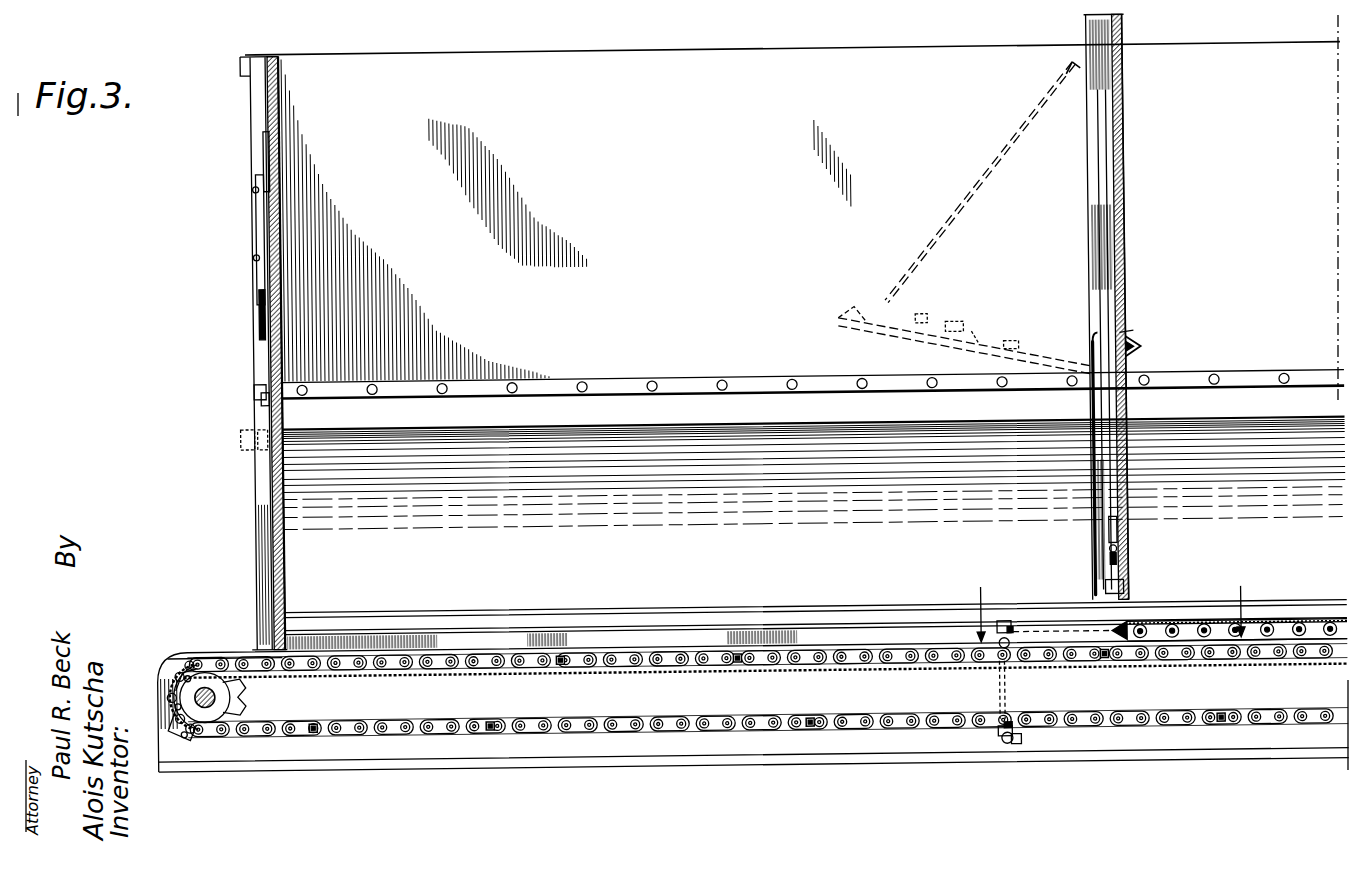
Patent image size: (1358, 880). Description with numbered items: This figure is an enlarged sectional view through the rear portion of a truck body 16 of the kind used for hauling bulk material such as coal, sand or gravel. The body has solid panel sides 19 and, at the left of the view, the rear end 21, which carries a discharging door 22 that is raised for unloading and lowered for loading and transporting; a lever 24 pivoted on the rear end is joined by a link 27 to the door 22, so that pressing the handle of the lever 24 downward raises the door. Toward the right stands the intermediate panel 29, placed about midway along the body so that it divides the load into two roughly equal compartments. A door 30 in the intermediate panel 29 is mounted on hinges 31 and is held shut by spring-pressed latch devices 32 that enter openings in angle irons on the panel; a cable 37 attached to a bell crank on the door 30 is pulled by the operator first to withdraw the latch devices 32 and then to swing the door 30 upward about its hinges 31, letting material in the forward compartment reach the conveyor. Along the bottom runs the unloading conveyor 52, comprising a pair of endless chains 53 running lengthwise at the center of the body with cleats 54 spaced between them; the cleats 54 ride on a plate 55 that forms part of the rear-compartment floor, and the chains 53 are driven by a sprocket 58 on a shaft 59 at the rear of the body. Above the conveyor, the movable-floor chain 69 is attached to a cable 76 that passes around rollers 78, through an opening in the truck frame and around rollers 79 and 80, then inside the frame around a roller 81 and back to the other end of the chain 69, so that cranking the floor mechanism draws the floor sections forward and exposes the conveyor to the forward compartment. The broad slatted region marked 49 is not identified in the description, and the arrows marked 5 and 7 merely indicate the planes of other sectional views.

The section line 5- 5 is at (548, 11).
The section line 7- 7 is at (1109, 601).
The truck body 16 is at (798, 54).
The solid panel sides 19 is at (727, 192).
The rear end 21 is at (279, 97).
The discharging door 22 is at (264, 157).
The lever 24 is at (258, 285).
The link 27 is at (262, 215).
The intermediate panel 29 is at (1124, 141).
The door 30 is at (988, 354).
The hinges 31 is at (1097, 370).
The latch devices 32 is at (1124, 563).
The cable 37 is at (972, 198).
The roller curtain 49 is at (738, 573).
The unloading conveyor 52 is at (822, 658).
The endless chains 53 is at (808, 725).
The cleats 54 is at (555, 660).
The plate 55 is at (603, 680).
The sprocket 58 is at (222, 700).
The shaft 59 is at (206, 712).
The chains 69 is at (1263, 641).
The cable 76 is at (1217, 749).
The rollers 78 is at (1010, 752).
The roller 79 is at (990, 743).
The roller 80 is at (1003, 668).
The roller 81 is at (1003, 636).